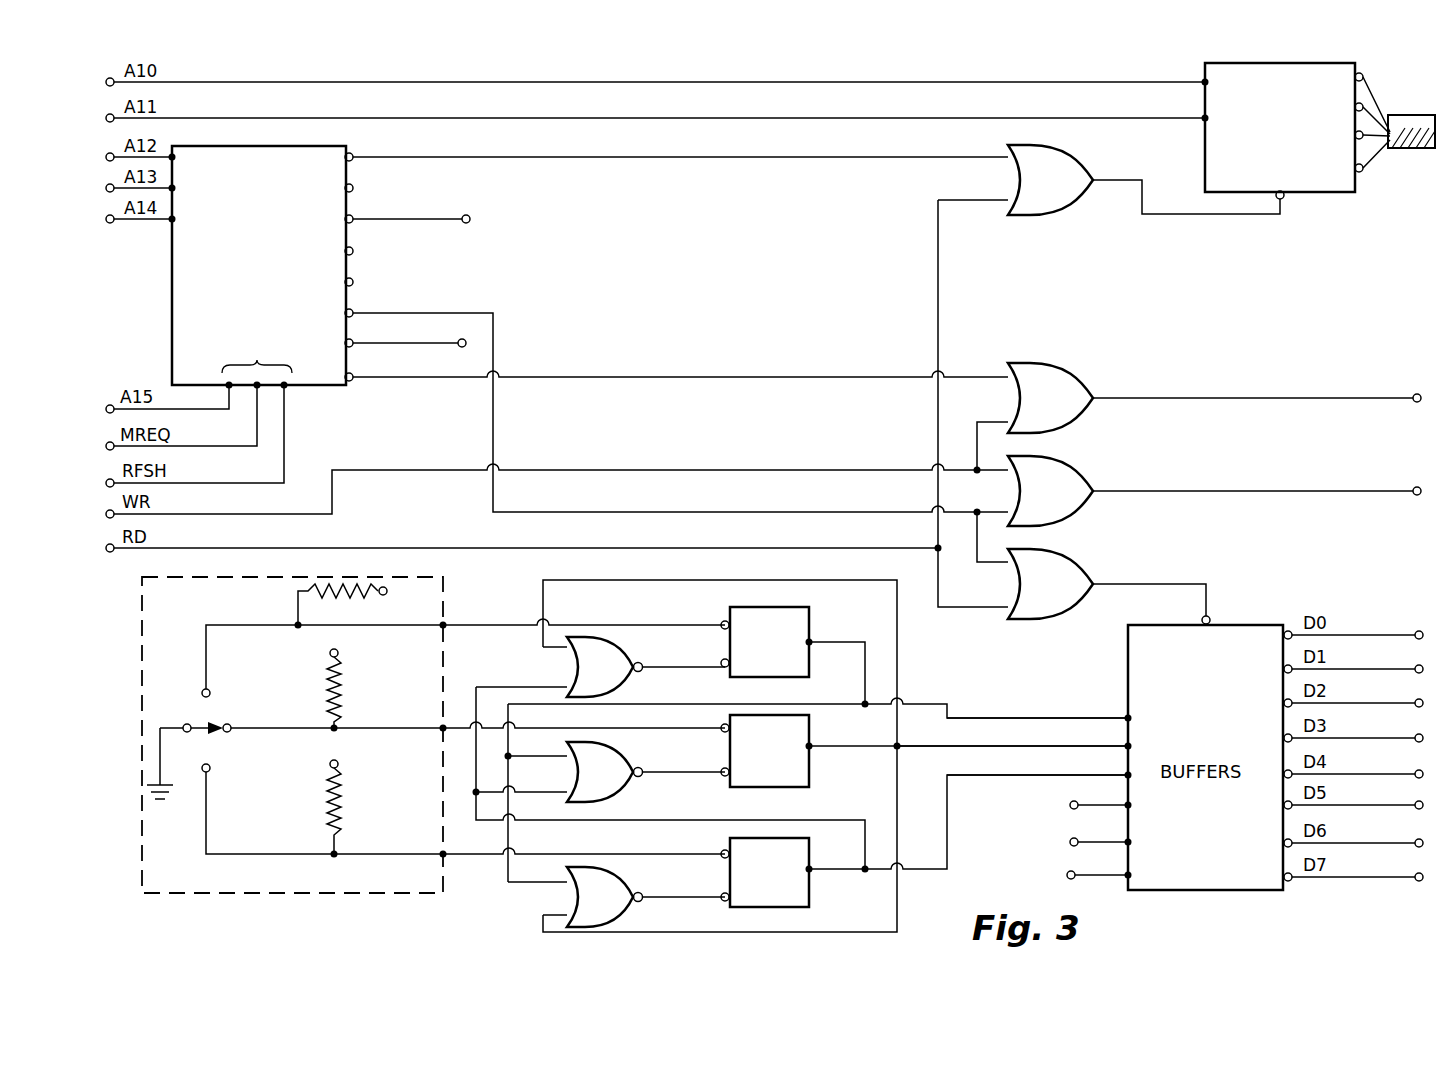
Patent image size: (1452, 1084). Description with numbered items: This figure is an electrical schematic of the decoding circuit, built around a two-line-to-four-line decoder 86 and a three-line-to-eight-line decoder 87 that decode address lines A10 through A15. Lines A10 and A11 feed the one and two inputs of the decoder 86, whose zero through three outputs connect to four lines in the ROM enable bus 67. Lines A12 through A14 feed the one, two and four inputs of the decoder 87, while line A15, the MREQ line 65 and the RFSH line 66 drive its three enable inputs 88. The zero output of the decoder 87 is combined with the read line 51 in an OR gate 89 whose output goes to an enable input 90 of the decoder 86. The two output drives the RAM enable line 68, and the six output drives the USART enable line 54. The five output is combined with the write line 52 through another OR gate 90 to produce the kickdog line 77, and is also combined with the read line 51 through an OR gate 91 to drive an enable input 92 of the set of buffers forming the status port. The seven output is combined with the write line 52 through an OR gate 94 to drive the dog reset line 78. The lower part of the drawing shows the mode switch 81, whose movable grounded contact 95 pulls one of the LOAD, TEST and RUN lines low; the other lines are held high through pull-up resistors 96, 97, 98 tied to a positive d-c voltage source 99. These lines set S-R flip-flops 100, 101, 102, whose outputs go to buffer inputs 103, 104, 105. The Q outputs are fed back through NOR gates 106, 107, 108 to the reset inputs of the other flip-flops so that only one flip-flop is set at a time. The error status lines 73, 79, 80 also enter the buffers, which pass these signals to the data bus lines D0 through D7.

The read line 51 is at (230, 548).
The write line 52 is at (230, 514).
The USART enable line 54 is at (460, 348).
The MREQ line 65 is at (202, 446).
The RFSH line 66 is at (218, 483).
The ROM enable bus 67 is at (1410, 150).
The RAM enable line 68 is at (470, 221).
The error status line 73 is at (1070, 805).
The kickdog line 77 is at (1414, 489).
The dog reset line 78 is at (1414, 396).
The error status line 79 is at (1070, 842).
The error status line 80 is at (1067, 875).
The mode switch 81 is at (140, 660).
The 2-line-to-4-line decoder 86 is at (1292, 101).
The 3-line-to-8-line decoder 87 is at (172, 318).
The enable inputs 88 is at (257, 357).
The OR gate 89 is at (1056, 190).
The OR gate 90 is at (1056, 501).
The OR gate 91 is at (1056, 594).
The enable input 92 is at (1206, 600).
The OR gate 94 is at (1056, 408).
The grounded contact 95 is at (200, 725).
The pull-up resistor 96 is at (300, 584).
The pull-up resistor 97 is at (342, 690).
The pull-up resistor 98 is at (342, 808).
The positive d-c voltage source 99 is at (386, 595).
The S-R flip-flop 100 is at (781, 651).
The S-R flip-flop 101 is at (778, 755).
The S-R flip-flop 102 is at (778, 878).
The buffer input 103 is at (1126, 716).
The buffer input 104 is at (1126, 746).
The buffer input 105 is at (1126, 775).
The NOR gate 106 is at (610, 677).
The NOR gate 107 is at (610, 782).
The NOR gate 108 is at (610, 907).